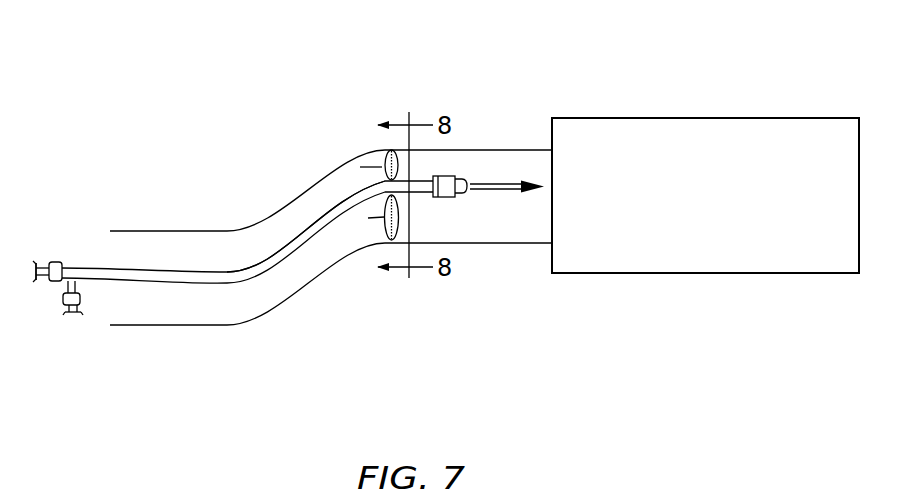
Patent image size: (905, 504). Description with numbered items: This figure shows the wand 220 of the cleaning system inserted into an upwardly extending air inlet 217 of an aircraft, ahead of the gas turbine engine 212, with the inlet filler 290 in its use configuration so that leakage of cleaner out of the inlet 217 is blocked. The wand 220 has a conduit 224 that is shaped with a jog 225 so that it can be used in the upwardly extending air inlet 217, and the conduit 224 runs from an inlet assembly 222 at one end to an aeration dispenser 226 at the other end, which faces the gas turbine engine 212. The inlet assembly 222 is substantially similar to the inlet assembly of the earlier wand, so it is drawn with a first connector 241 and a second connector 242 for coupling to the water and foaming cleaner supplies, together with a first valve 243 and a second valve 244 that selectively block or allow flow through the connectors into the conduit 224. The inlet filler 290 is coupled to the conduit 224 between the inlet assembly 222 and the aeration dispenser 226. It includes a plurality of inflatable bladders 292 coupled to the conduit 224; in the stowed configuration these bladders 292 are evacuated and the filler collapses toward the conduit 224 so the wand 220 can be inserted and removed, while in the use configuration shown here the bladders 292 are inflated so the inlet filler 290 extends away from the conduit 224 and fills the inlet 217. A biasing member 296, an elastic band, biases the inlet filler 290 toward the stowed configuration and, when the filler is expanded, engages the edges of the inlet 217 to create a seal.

The gas turbine engine 212 is at (704, 117).
The upwardly extending air inlet 217 is at (159, 325).
The wand 220 is at (250, 283).
The inlet assembly 222 is at (94, 224).
The conduit 224 is at (162, 271).
The jog 225 is at (265, 251).
The aeration dispenser 226 is at (459, 176).
The connector 241 is at (43, 261).
The port fitting 242 is at (61, 309).
The coupling 243 is at (57, 256).
The valve 244 is at (59, 300).
The inlet filler 290 is at (382, 167).
The inflatable bladders 292 is at (402, 166).
The biasing member 296 is at (384, 217).